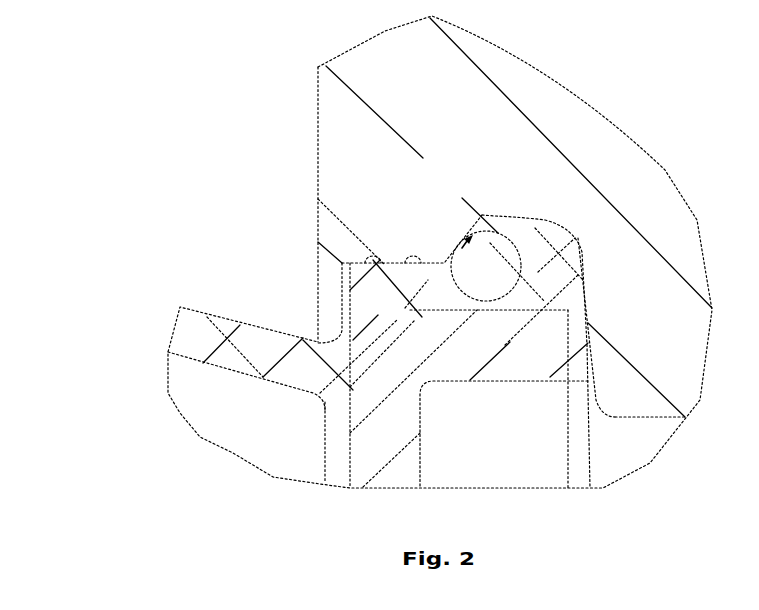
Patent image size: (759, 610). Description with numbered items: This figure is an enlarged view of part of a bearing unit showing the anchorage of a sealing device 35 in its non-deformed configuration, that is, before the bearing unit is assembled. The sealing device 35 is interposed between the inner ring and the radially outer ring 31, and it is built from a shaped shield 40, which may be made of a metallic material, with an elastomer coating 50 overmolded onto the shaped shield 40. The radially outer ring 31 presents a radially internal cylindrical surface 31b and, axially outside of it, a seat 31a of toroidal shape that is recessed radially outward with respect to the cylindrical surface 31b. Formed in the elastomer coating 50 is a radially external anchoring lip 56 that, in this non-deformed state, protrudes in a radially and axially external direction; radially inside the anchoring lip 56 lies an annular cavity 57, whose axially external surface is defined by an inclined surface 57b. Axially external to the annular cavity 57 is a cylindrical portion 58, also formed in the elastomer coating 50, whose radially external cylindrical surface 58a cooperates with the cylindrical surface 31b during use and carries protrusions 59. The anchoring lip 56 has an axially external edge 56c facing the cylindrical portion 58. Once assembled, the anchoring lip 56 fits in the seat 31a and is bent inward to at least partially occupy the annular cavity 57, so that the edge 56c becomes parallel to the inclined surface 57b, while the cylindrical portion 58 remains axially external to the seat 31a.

The radially outer ring 31 is at (449, 113).
The seat 31a is at (535, 228).
The radially internal cylindrical surface 31b is at (433, 270).
The sealing device 35 is at (150, 416).
The shaped shield 40 is at (413, 460).
The elastomer coating 50 is at (337, 463).
The radially external anchoring lip 56 is at (513, 237).
The axially external edge 56c is at (452, 272).
The annular cavity 57 is at (482, 287).
The inclined surface 57b is at (453, 258).
The cylindrical portion 58 is at (375, 297).
The radially external cylindrical surface 58a is at (355, 249).
The protrusion 59 is at (413, 258).